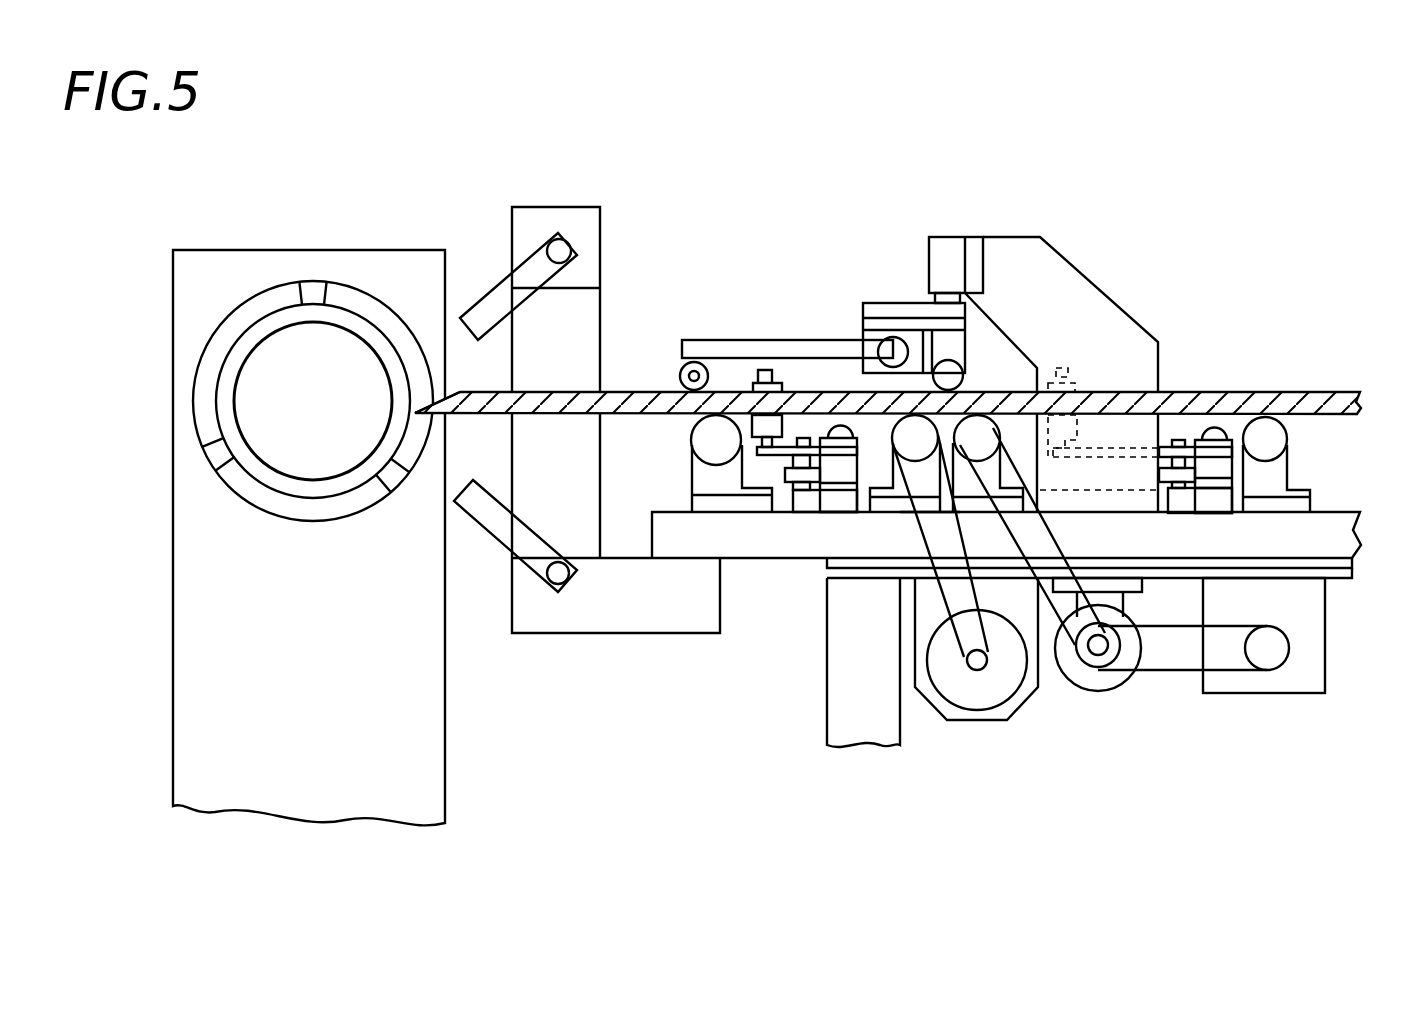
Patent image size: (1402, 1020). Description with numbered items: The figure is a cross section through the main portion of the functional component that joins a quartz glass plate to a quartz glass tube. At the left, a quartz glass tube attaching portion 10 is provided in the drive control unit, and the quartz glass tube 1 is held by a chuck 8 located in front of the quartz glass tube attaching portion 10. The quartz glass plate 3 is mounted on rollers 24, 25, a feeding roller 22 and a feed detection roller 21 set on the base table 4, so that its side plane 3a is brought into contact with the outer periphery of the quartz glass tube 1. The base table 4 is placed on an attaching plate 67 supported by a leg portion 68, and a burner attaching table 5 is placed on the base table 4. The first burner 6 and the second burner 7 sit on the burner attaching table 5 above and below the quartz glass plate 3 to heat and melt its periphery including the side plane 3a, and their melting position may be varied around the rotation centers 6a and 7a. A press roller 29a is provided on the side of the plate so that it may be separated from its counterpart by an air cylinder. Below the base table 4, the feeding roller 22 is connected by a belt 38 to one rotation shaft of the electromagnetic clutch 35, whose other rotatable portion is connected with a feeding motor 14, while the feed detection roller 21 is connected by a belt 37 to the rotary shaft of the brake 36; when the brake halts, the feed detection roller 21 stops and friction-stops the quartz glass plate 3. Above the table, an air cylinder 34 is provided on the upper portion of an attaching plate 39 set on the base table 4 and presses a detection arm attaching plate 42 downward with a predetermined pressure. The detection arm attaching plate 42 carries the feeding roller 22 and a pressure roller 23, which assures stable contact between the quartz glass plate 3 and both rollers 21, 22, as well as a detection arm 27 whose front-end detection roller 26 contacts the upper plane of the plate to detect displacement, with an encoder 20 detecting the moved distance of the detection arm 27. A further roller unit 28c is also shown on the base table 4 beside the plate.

The quartz glass tube 1 is at (308, 492).
The quartz glass plate 3 is at (1281, 400).
The side plane 3a is at (415, 412).
The base table 4 is at (745, 542).
The burner attaching table 5 is at (627, 617).
The first burner 6 is at (490, 303).
The rotation center 6a is at (547, 247).
The second burner 7 is at (493, 522).
The rotation center 7a is at (548, 585).
The chuck 8 is at (257, 312).
The quartz glass tube attaching portion 10 is at (360, 250).
The feeding motor 14 is at (1300, 680).
The encoder 20 is at (880, 307).
The feed detection roller 21 is at (903, 432).
The feeding roller 22 is at (977, 432).
The pressure roller 23 is at (946, 360).
The roller 24 is at (715, 452).
The roller 25 is at (1282, 440).
The detection roller 26 is at (672, 380).
The detection arm 27 is at (697, 348).
The cutter unit 28c is at (767, 440).
The press roller 29a is at (1080, 385).
The air cylinder 34 is at (940, 243).
The electromagnetic clutch 35 is at (1123, 687).
The brake 36 is at (987, 695).
The belt 37 is at (918, 532).
The belt 38 is at (1057, 532).
The attaching plate 39 is at (1022, 243).
The detection arm attaching plate 42 is at (882, 338).
The attaching plate 67 is at (830, 562).
The leg portion 68 is at (897, 730).